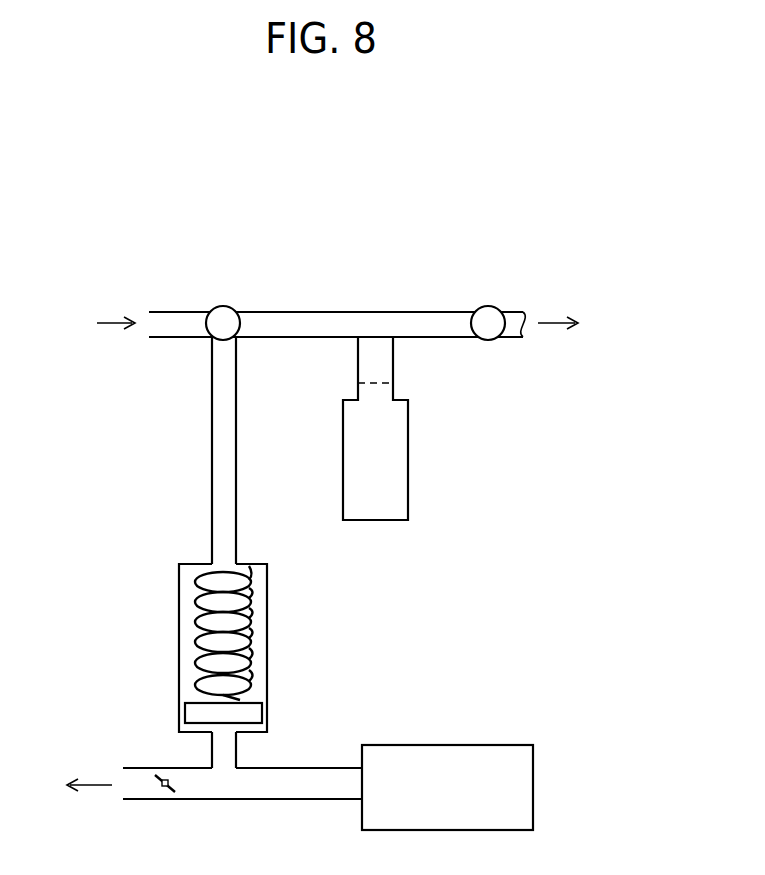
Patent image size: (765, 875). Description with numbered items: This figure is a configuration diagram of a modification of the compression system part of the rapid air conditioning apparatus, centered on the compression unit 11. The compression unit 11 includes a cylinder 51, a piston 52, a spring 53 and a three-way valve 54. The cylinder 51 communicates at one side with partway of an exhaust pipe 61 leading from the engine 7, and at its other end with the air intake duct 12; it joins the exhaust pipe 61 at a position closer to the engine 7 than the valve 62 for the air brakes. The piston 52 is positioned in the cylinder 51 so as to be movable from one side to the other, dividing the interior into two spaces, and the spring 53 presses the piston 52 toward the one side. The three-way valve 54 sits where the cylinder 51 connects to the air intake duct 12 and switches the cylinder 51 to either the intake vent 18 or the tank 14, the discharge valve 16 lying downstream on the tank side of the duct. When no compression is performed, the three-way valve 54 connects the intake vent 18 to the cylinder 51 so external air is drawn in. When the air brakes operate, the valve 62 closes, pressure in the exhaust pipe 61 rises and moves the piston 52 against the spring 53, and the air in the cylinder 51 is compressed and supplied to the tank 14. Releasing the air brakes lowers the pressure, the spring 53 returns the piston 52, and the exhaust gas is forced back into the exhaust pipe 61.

The engine 7 is at (533, 772).
The compression unit 11 is at (113, 574).
The air intake duct 12 is at (352, 298).
The tank 14 is at (390, 520).
The discharge valve 16 is at (488, 306).
The intake vent 18 is at (152, 321).
The cylinder 51 is at (268, 597).
The piston 52 is at (255, 712).
The spring 53 is at (253, 652).
The three-way valve 54 is at (233, 336).
The exhaust pipe 61 is at (263, 800).
The valve for the air brakes 62 is at (166, 791).